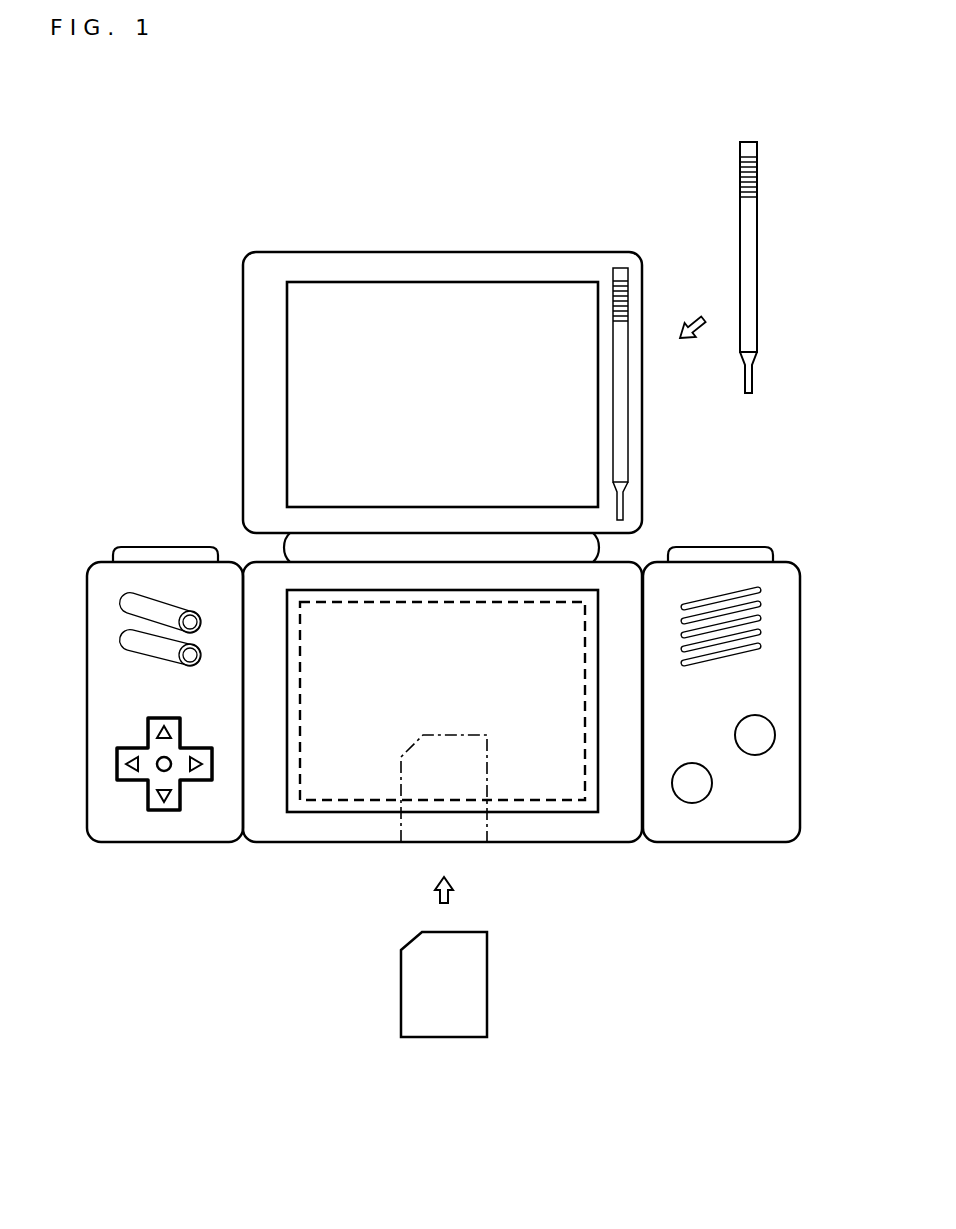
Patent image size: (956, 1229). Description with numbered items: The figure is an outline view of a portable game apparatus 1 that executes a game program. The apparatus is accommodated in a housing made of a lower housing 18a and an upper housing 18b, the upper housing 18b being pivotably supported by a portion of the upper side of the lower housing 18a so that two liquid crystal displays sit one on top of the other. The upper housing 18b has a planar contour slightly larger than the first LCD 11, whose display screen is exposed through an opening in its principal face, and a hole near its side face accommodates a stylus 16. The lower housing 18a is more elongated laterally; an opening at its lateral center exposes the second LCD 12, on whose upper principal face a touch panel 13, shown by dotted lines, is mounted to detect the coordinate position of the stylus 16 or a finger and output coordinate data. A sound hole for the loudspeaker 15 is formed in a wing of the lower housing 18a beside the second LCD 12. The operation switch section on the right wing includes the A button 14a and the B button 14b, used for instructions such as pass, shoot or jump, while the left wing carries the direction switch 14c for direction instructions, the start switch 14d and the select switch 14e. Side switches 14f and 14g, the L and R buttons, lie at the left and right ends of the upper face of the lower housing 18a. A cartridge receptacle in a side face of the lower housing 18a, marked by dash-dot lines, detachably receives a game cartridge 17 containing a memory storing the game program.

The game apparatus 1 is at (492, 206).
The first LCD 11 is at (287, 397).
The second LCD 12 is at (315, 812).
The touch panel 13 is at (577, 802).
The operation switch (A button) 14a is at (775, 730).
The operation switch (B button) 14b is at (692, 803).
The direction switch (cross key) 14c is at (168, 810).
The start switch 14d is at (178, 625).
The select switch 14e is at (178, 658).
The side switch (L button) 14f is at (155, 547).
The side switch (R button) 14g is at (740, 547).
The loudspeaker 15 is at (760, 612).
The stylus 16 is at (757, 250).
The game cartridge 17 is at (487, 978).
The lower housing 18a is at (630, 562).
The upper housing 18b is at (583, 253).